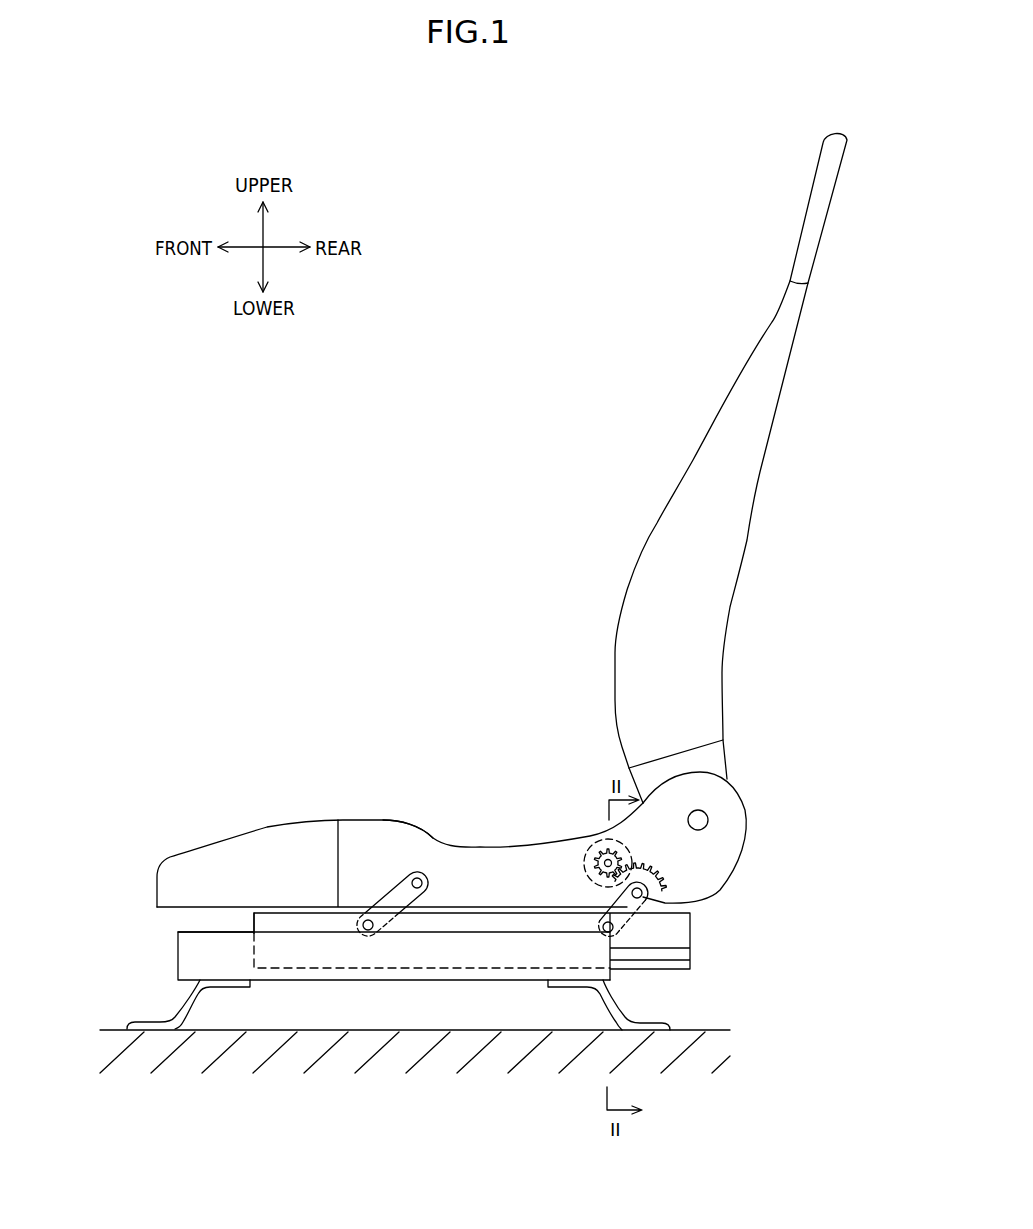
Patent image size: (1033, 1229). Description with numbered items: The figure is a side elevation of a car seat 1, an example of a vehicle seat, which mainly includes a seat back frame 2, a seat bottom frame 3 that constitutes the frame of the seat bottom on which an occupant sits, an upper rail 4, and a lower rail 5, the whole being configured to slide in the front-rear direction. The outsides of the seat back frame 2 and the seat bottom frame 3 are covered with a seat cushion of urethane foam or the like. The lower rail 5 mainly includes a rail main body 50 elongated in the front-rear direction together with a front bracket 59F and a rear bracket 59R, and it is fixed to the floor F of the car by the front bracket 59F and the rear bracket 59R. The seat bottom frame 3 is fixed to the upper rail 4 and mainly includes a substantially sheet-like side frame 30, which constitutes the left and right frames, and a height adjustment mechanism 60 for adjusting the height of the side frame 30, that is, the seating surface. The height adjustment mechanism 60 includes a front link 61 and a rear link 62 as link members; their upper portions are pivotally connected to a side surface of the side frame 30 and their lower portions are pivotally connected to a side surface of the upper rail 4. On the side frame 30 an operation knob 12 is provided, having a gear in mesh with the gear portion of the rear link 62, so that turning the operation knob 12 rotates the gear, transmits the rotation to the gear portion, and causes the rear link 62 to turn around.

The car seat 1 is at (428, 446).
The seat back frame 2 is at (688, 440).
The seat bottom frame 3 is at (320, 806).
The side frame 30 is at (409, 813).
The upper rail 4 is at (704, 933).
The lower rail 5 is at (185, 913).
The rail main body 50 is at (165, 955).
The operation knob 12 is at (590, 852).
The height adjustment mechanism 60 is at (692, 858).
The front link 61 is at (393, 893).
The rear link 62 is at (712, 897).
The front bracket 59F is at (148, 1022).
The rear bracket 59R is at (613, 1003).
The floor F is at (690, 1028).